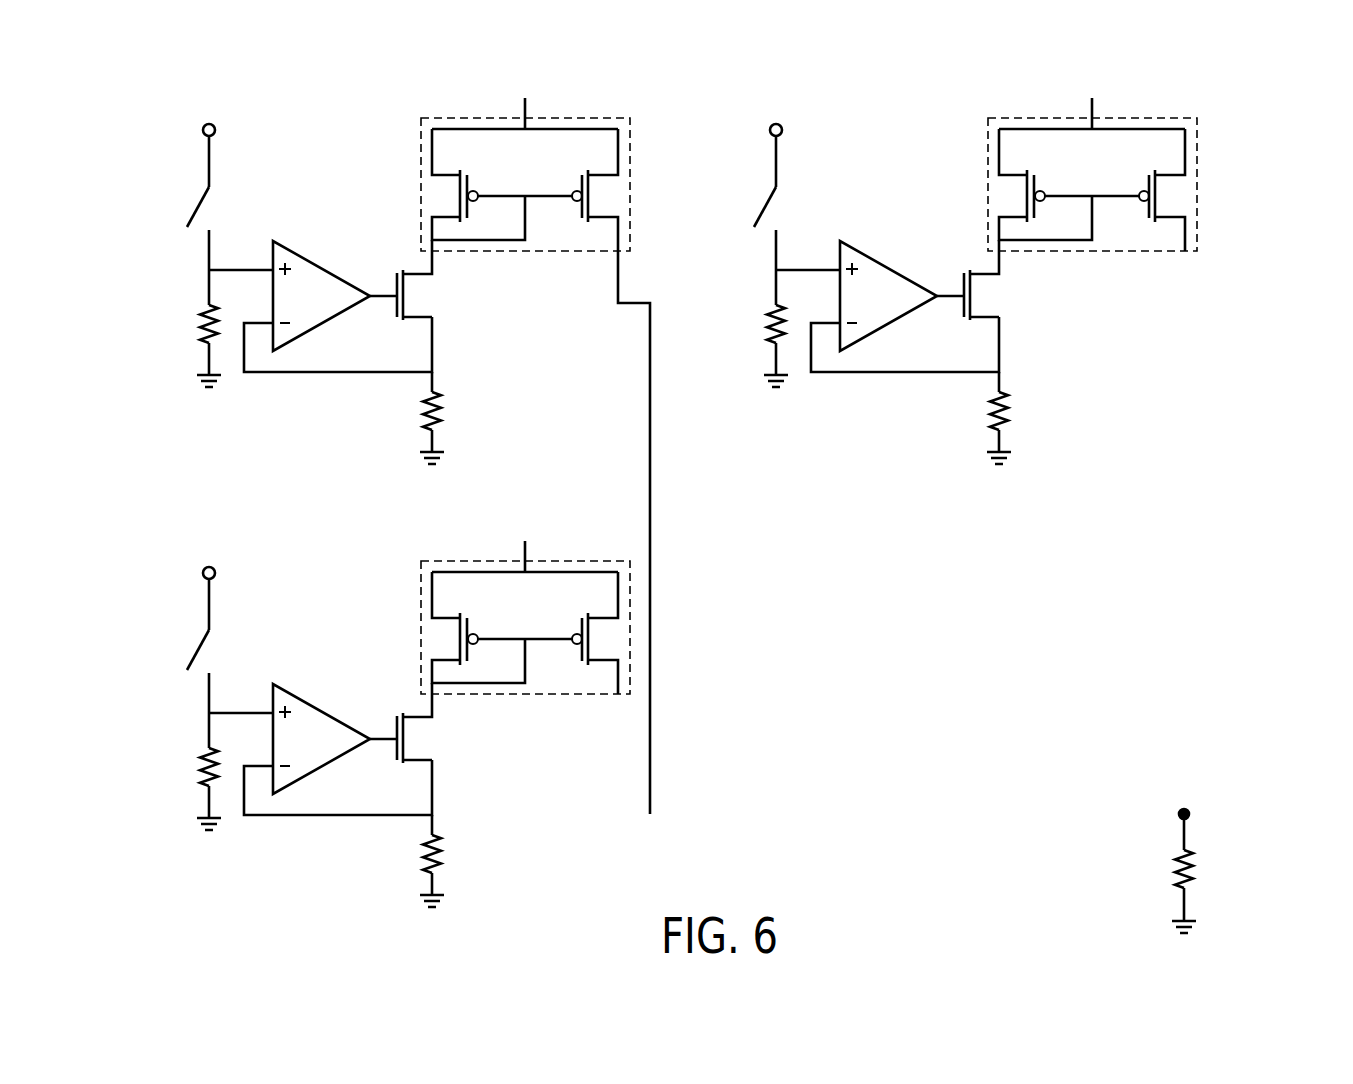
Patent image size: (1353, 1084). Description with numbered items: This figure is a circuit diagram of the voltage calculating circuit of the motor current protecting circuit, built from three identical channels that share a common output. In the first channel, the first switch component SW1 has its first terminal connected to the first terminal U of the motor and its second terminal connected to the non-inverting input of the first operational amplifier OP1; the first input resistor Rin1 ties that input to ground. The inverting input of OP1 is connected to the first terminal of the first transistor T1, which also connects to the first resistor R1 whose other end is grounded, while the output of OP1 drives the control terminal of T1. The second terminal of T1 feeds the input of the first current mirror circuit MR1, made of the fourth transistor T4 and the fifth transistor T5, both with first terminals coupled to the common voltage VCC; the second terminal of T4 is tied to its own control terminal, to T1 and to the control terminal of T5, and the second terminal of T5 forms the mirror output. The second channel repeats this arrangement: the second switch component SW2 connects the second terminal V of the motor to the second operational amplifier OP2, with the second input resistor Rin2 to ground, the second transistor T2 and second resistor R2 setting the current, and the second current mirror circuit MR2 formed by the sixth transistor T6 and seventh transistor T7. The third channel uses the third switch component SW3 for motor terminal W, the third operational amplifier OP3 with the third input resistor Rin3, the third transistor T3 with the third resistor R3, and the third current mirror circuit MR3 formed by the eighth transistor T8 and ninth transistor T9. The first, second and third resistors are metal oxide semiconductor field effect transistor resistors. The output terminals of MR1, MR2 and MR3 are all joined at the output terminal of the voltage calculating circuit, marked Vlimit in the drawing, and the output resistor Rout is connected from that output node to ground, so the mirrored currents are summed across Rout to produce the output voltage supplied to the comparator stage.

The first terminal of the motor U is at (208, 139).
The second terminal of the motor V is at (776, 139).
The terminal of the motor W is at (209, 582).
The first switch component SW1 is at (169, 228).
The second switch component SW2 is at (736, 228).
The third switch component SW3 is at (169, 671).
The first input resistor Rin1 is at (179, 346).
The second input resistor Rin2 is at (746, 346).
The third input resistor Rin3 is at (179, 789).
The first operational amplifier OP1 is at (323, 275).
The second operational amplifier OP2 is at (893, 277).
The third operational amplifier OP3 is at (326, 720).
The first transistor T1 is at (401, 299).
The second transistor T2 is at (968, 299).
The third transistor T3 is at (401, 742).
The first resistor R1 is at (412, 418).
The second resistor R2 is at (979, 418).
The third resistor R3 is at (412, 861).
The first current mirror circuit MR1 is at (567, 117).
The second current mirror circuit MR2 is at (1092, 148).
The third current mirror circuit MR3 is at (525, 591).
The fourth transistor T4 is at (481, 181).
The fifth transistor T5 is at (569, 181).
The sixth transistor T6 is at (1048, 181).
The seventh transistor T7 is at (1136, 181).
The eighth transistor T8 is at (481, 624).
The ninth transistor T9 is at (569, 624).
The common voltage VCC is at (808, 320).
The limit voltage node Vlimit is at (1225, 816).
The output resistor Rout is at (1153, 873).